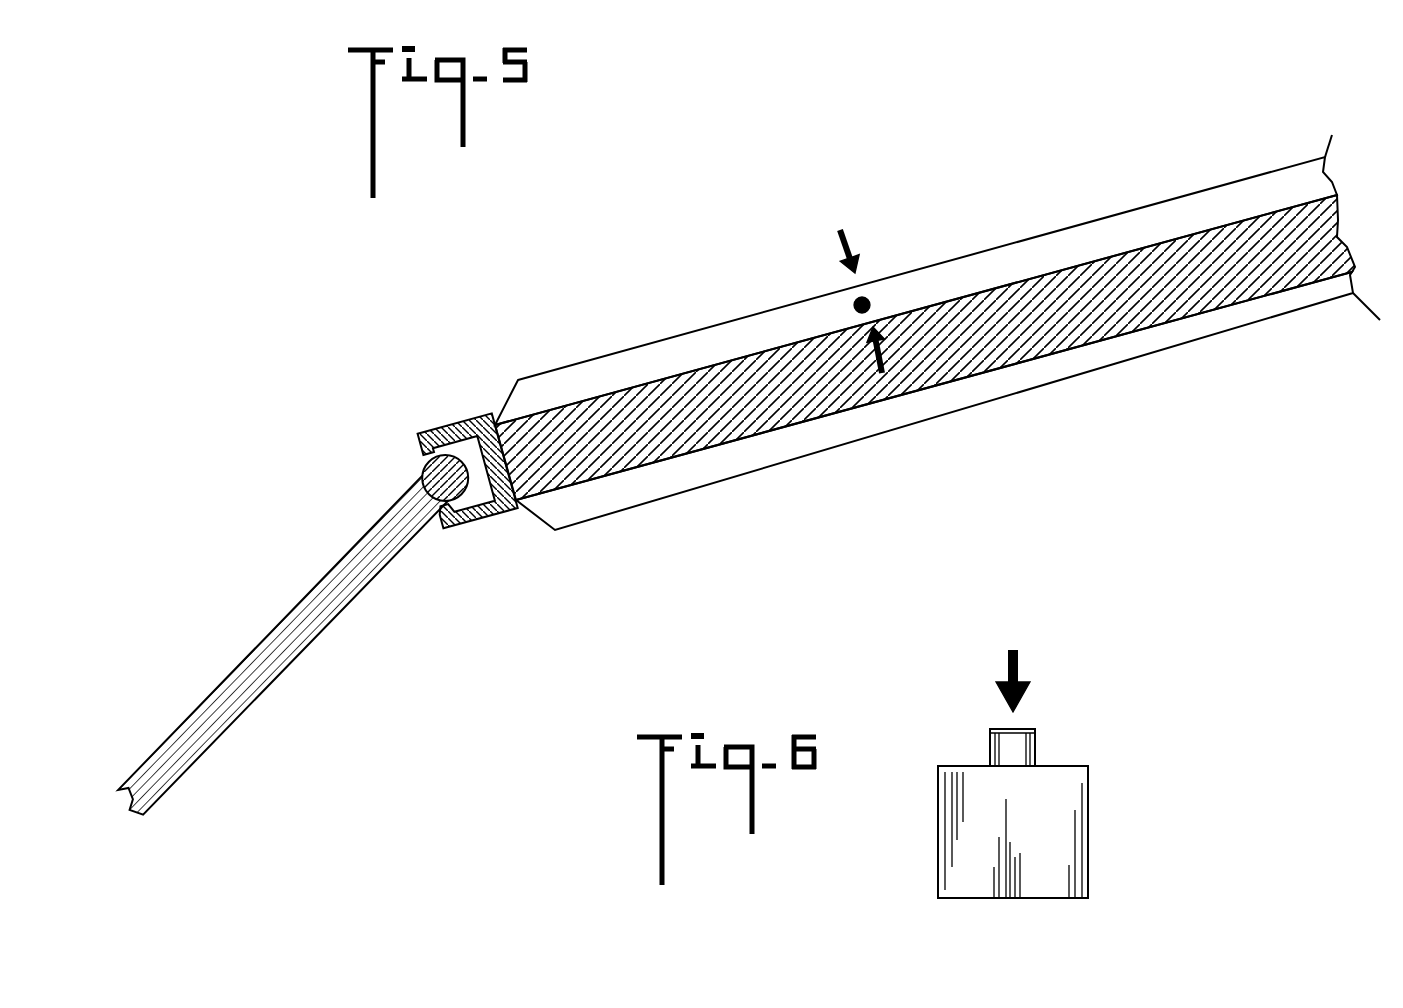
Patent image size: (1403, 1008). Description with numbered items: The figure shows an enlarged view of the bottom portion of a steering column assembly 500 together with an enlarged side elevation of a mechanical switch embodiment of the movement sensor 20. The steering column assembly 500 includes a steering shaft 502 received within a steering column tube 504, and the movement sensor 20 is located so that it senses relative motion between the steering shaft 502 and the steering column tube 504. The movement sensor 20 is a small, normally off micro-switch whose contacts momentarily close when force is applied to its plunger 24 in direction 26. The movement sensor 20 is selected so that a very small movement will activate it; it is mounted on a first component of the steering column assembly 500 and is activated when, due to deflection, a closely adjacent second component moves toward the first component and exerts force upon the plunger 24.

In FIG. 5, the steering column assembly 500 is at (937, 332).
In FIG. 5, the steering shaft 502 is at (728, 440).
In FIG. 5, the steering column tube 504 is at (947, 262).
In FIG. 5, the movement sensor 20 is at (870, 302).
In FIG. 6, the movement sensor 20 is at (1088, 882).
In FIG. 6, the plunger 24 is at (1035, 735).
In FIG. 6, the direction 26 is at (1018, 671).